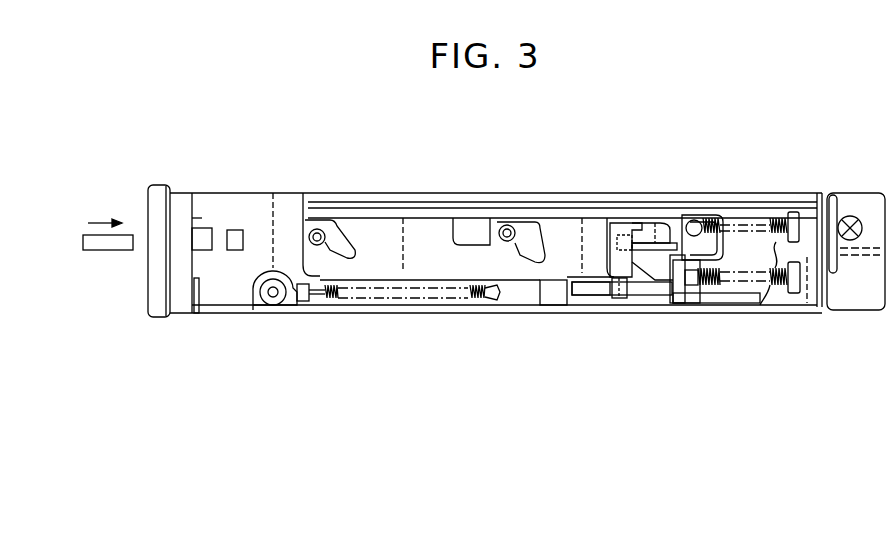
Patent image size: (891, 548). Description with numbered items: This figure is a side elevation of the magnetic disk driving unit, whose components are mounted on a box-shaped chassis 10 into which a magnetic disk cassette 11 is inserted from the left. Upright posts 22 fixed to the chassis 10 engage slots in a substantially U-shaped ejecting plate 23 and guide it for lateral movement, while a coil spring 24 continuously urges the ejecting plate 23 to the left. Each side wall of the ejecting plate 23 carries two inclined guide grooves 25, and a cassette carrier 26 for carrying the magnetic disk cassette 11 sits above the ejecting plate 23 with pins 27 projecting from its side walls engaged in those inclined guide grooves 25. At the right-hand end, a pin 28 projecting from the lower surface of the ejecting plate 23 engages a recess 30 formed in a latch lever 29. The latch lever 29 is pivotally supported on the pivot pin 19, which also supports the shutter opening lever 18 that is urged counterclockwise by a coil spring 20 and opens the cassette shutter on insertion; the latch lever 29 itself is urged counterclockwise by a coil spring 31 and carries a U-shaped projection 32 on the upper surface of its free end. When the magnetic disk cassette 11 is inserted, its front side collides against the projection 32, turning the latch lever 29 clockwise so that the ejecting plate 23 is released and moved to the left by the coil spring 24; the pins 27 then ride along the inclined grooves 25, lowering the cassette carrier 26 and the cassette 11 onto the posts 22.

The chassis 10 is at (314, 313).
The magnetic disk cassette 11 is at (106, 255).
The shutter opening lever 18 is at (668, 227).
The pivot pin 19 is at (690, 300).
The coil spring 20 is at (733, 222).
The posts 22 is at (552, 300).
The ejecting plate 23 is at (428, 300).
The coil spring 24 is at (348, 298).
The inclined guide grooves 25 is at (352, 225).
The cassette carrier 26 is at (465, 222).
The pins 27 is at (328, 225).
The pin 28 is at (617, 300).
The latch lever 29 is at (590, 298).
The recess 30 is at (632, 300).
The coil spring 31 is at (747, 310).
The U-shaped projection 32 is at (627, 228).